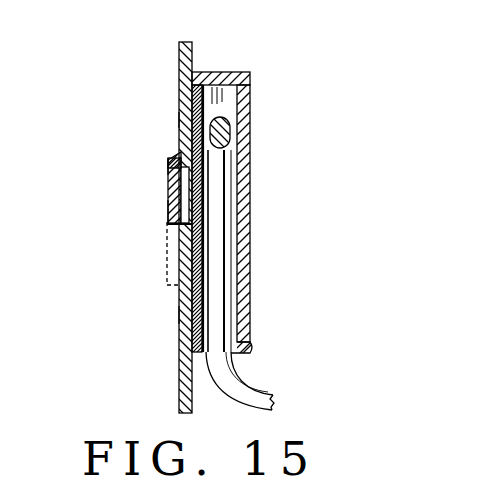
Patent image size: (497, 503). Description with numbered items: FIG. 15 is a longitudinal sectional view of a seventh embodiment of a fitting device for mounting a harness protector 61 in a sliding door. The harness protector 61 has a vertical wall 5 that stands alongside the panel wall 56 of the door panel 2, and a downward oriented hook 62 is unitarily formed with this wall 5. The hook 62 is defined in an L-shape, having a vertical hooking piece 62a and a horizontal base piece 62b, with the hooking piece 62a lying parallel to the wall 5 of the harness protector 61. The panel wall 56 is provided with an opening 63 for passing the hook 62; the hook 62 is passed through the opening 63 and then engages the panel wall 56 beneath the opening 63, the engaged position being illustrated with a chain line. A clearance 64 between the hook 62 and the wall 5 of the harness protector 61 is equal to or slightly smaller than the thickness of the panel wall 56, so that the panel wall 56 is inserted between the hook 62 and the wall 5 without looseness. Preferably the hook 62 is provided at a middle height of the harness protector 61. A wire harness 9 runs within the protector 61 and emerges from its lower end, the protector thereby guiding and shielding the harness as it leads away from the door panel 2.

The door panel 2 is at (179, 70).
The vertical wall 5 is at (180, 120).
The hose tube 9 is at (217, 290).
The panel wall 56 is at (177, 315).
The harness protector 61 is at (257, 68).
The hook 62 is at (167, 195).
The vertical hooking piece 62a is at (167, 208).
The horizontal base piece 62b is at (167, 149).
The opening 63 is at (203, 227).
The clearance 64 is at (167, 180).